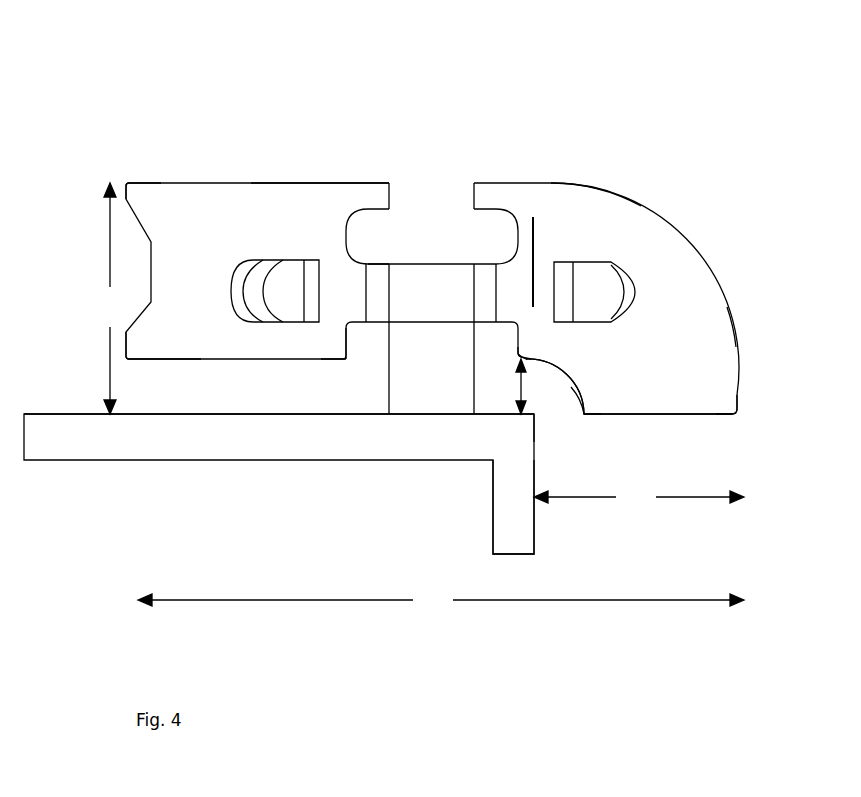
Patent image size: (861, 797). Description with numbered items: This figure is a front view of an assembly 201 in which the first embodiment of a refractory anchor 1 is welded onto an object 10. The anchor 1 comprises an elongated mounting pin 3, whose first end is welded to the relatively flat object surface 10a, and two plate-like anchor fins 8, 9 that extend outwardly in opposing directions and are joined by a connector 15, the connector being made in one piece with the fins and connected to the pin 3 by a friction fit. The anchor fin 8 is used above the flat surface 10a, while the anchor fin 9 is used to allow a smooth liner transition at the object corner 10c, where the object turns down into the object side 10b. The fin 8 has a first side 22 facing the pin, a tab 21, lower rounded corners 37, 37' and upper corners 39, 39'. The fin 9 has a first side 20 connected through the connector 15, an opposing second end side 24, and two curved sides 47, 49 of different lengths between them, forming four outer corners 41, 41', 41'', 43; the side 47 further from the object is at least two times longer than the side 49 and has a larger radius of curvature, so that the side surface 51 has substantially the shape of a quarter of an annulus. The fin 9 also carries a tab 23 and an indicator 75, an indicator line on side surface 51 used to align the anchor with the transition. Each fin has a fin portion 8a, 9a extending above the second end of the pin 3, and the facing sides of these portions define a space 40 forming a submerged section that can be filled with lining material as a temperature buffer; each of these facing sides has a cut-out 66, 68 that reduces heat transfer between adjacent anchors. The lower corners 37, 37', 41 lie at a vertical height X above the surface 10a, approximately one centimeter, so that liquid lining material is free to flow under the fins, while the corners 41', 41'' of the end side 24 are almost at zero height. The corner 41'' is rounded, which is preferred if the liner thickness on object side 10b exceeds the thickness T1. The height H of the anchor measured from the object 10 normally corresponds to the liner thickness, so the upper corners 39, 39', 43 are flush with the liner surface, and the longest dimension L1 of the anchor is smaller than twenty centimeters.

The assembly 201 is at (176, 116).
The refractory anchor 1 is at (83, 265).
The elongated mounting pin 3 is at (420, 380).
The anchor fin 8 is at (200, 328).
The anchor fin portion 8a is at (335, 203).
The anchor fin 9 is at (684, 362).
The anchor fin portion 9a is at (560, 212).
The object 10 is at (250, 437).
The object surface 10a is at (210, 413).
The object side 10b is at (533, 527).
The object corner 10c is at (533, 415).
The connector 15 is at (425, 292).
The first side 20 is at (495, 290).
The tab 21 is at (288, 302).
The first side 22 is at (365, 290).
The tab 23 is at (597, 278).
The second end side 24 is at (668, 412).
The rounded corner 37 is at (115, 345).
The rounded corner 37' is at (350, 362).
The outer corner 39 is at (114, 162).
The outer corner 39' is at (409, 176).
The space 40 is at (431, 173).
The rounded corner 41 is at (555, 342).
The rounded corner 41' is at (607, 424).
The rounded corner 41'' is at (771, 421).
The outer corner 43 is at (475, 205).
The side 47 is at (725, 324).
The side 49 is at (573, 375).
The side surface 51 is at (642, 315).
The cut-out 66 is at (345, 240).
The cut-out 68 is at (533, 212).
The indicator 75 is at (545, 215).
The height H is at (106, 298).
The vertical height X is at (531, 386).
The liner thickness T1 is at (639, 497).
The longest dimension L1 is at (441, 600).